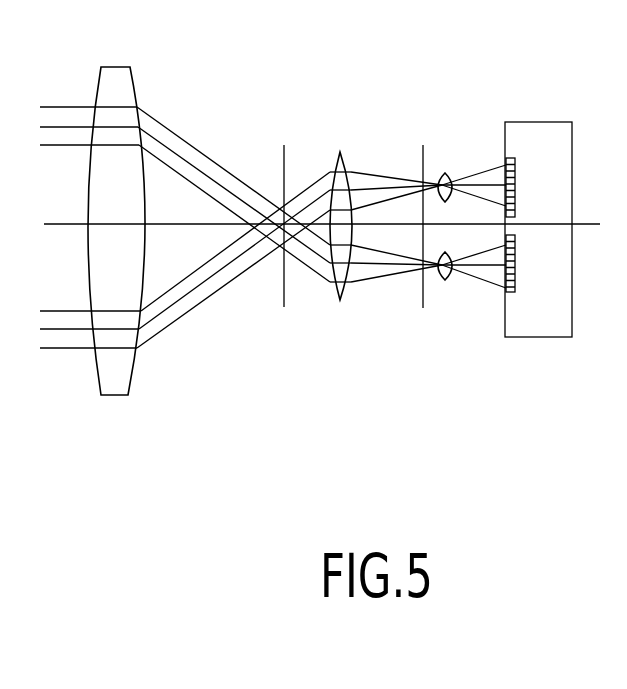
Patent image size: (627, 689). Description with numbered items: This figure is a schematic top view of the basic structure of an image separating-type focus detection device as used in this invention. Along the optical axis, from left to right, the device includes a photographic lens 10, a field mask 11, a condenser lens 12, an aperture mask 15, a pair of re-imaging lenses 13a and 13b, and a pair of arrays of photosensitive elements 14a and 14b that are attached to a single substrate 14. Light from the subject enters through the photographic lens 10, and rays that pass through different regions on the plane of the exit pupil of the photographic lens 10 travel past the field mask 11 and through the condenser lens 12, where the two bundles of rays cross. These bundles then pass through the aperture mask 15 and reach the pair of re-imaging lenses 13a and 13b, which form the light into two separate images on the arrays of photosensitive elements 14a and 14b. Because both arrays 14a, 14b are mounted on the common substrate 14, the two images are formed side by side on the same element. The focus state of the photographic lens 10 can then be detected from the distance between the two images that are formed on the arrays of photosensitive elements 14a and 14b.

The photographic lens 10 is at (112, 396).
The field mask 11 is at (283, 313).
The condenser lens 12 is at (340, 301).
The re-imaging lens 13a is at (443, 173).
The re-imaging lens 13b is at (447, 281).
The substrate 14 is at (558, 170).
The array of photosensitive elements 14a is at (512, 158).
The array of photosensitive elements 14b is at (512, 291).
The aperture mask 15 is at (423, 314).